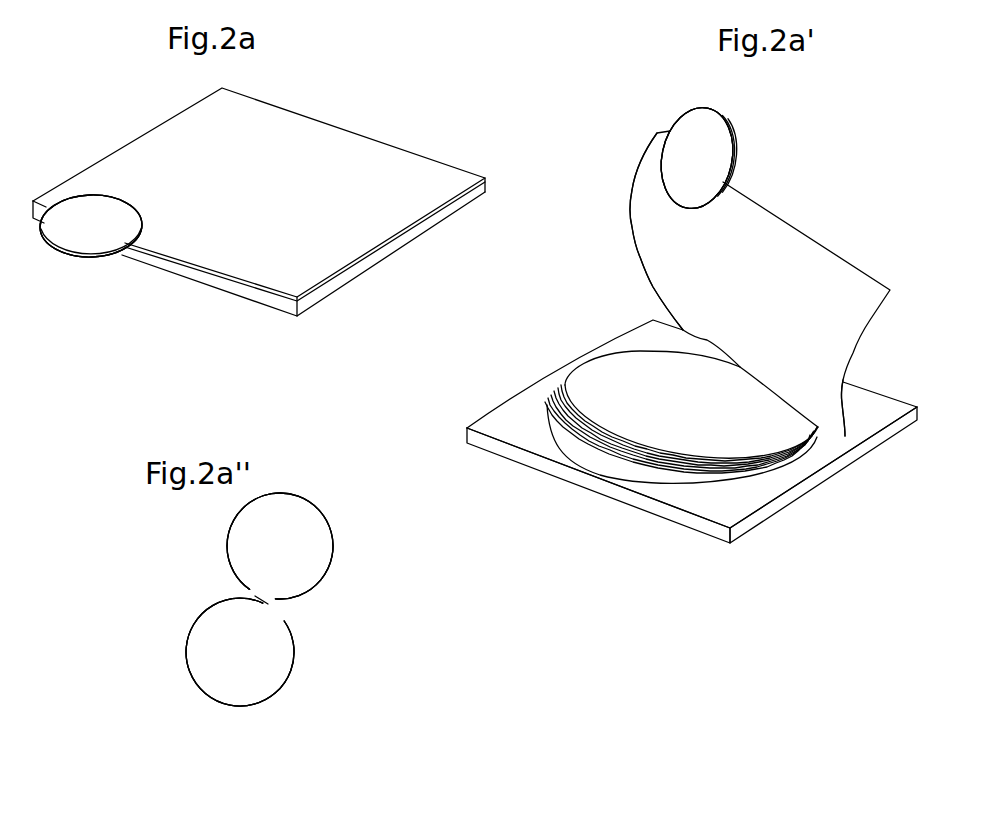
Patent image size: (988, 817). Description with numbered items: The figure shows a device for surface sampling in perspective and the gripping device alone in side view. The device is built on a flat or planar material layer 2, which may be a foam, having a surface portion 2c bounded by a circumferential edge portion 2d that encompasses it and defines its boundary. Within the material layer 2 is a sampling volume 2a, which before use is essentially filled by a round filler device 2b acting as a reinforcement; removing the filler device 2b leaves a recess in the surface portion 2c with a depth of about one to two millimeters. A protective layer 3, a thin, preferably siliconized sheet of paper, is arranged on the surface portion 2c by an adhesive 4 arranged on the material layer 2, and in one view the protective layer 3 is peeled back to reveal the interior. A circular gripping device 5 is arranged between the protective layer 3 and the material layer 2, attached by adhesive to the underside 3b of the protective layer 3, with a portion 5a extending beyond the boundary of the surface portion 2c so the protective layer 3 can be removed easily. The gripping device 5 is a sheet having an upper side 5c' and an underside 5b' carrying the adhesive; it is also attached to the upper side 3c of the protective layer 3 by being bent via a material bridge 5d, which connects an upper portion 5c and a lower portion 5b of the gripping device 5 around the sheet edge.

In FIG. 2A', the material layer 2 is at (523, 448).
In FIG. 2A', the sampling volume 2a is at (603, 452).
In FIG. 2A', the filler device 2b is at (607, 370).
In FIG. 2A', the surface portion 2c is at (618, 482).
In FIG. 2A', the circumferential edge portion 2d is at (693, 525).
In FIG. 2A', the protective layer 3 is at (850, 283).
In FIG. 2A', the underside of the protective layer 3b is at (683, 270).
In FIG. 2A, the upper side of the protective layer 3c is at (377, 167).
In FIG. 2A', the upper side of the protective layer 3c is at (872, 403).
In FIG. 2A', the adhesive 4 is at (727, 512).
In FIG. 2A, the gripping device 5 is at (100, 240).
In FIG. 2A', the gripping device 5 is at (698, 123).
In FIG. 2A'', the gripping device 5 is at (180, 577).
In FIG. 2A, the portion extending beyond the boundary 5a is at (78, 242).
In FIG. 2A', the portion extending beyond the boundary 5a is at (730, 133).
In FIG. 2A', the lower portion of the gripping device 5b is at (657, 158).
In FIG. 2A'', the lower portion of the gripping device 5b is at (262, 658).
In FIG. 2A'', the underside of the gripping device 5b' is at (233, 599).
In FIG. 2A, the upper portion of the gripping device 5c is at (82, 251).
In FIG. 2A'', the upper portion of the gripping device 5c is at (308, 546).
In FIG. 2A, the upper side of the gripping device 5c' is at (85, 201).
In FIG. 2A', the upper side of the gripping device 5c' is at (687, 145).
In FIG. 2A'', the material bridge 5d is at (267, 602).